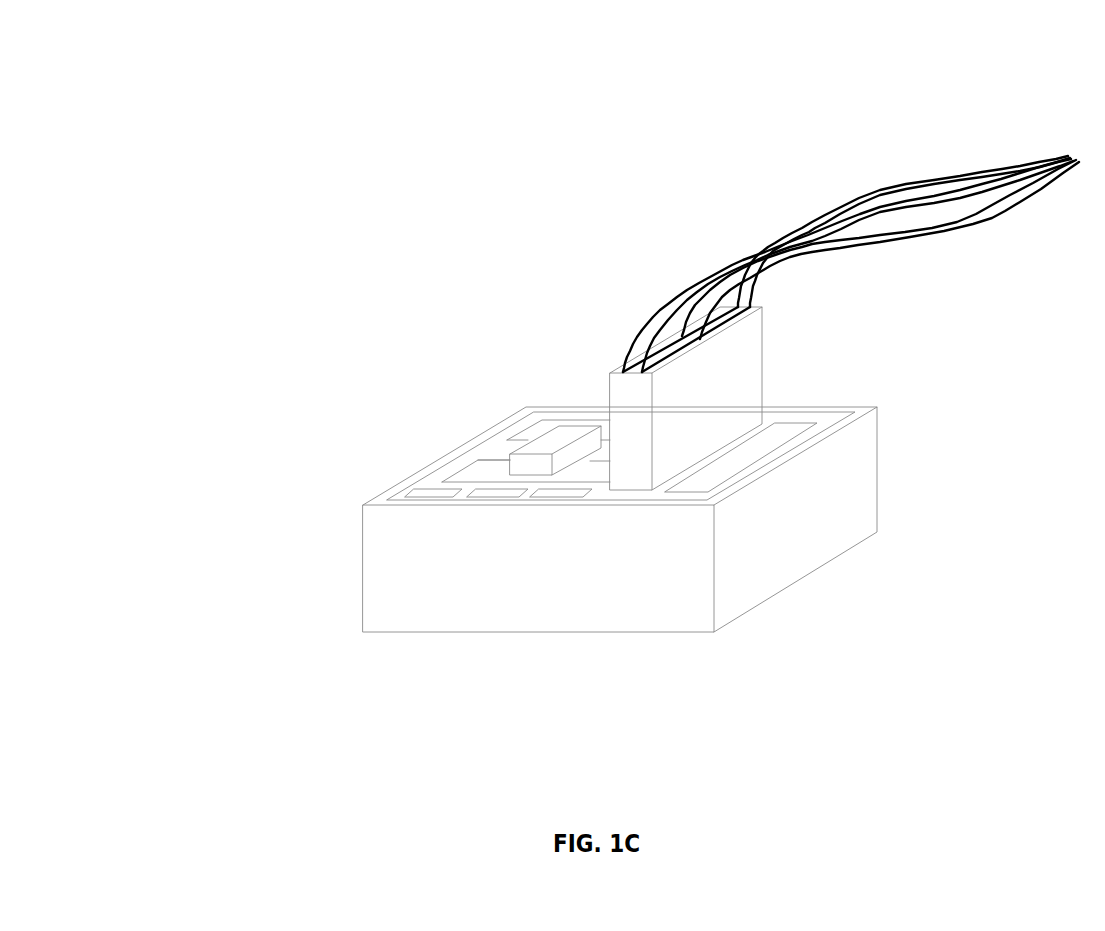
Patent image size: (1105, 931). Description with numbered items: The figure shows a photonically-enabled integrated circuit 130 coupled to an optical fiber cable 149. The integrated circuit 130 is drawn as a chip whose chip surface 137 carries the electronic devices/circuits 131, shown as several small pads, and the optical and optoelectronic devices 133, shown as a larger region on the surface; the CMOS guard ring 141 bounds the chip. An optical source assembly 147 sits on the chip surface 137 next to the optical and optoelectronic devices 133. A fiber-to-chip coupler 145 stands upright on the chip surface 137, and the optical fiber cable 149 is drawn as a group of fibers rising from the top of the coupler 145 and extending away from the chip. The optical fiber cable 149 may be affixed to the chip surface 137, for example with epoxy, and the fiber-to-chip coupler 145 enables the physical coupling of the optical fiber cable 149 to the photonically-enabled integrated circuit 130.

The photonically-enabled integrated circuit 130 is at (225, 104).
The electronic devices/circuits 131 is at (547, 497).
The optical and optoelectronic devices 133 is at (503, 478).
The chip surface 137 is at (488, 452).
The CMOS guard ring 141 is at (866, 410).
The fiber-to-chip coupler 145 is at (724, 410).
The optical source assembly 147 is at (563, 433).
The optical fiber cable 149 is at (907, 183).